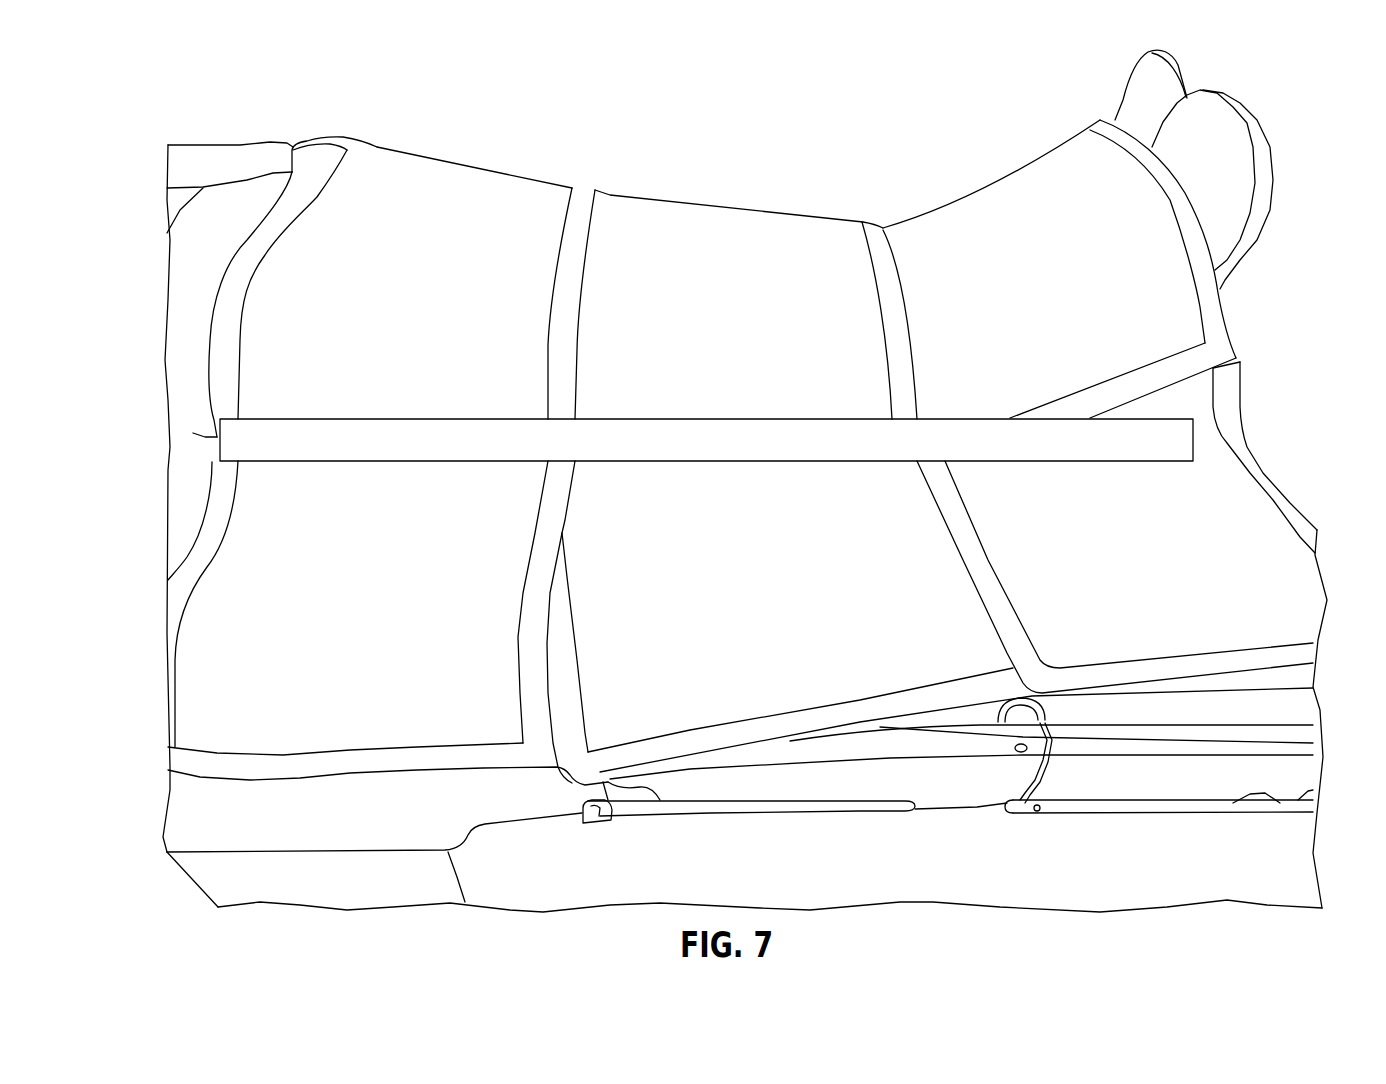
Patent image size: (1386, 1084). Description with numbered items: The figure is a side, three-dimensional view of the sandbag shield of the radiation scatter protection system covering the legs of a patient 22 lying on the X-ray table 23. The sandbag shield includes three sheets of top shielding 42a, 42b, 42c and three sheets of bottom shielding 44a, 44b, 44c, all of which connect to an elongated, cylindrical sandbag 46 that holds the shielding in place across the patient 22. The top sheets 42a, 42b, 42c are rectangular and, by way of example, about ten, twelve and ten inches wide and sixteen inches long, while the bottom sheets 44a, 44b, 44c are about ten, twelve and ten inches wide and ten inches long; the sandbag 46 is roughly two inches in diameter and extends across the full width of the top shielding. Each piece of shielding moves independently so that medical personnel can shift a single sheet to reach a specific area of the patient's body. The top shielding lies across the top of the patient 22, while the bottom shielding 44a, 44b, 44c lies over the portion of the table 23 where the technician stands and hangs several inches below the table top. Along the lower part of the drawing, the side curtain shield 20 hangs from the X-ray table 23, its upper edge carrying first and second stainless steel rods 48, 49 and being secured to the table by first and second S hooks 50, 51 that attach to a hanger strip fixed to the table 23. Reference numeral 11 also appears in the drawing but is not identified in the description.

The garment 11 is at (1050, 193).
The side curtain shield 20 is at (908, 882).
The patient 22 is at (1127, 95).
The X-ray table 23 is at (1295, 763).
The top shielding sheet 42a is at (465, 203).
The top shielding sheet 42b is at (677, 228).
The top shielding sheet 42c is at (928, 238).
The bottom shielding sheet 44a is at (217, 710).
The bottom shielding sheet 44b is at (680, 710).
The bottom shielding sheet 44c is at (1238, 523).
The sandbag 46 is at (1158, 440).
The first stainless steel rod 48 is at (818, 807).
The second stainless steel rod 49 is at (1210, 805).
The first S hook 50 is at (610, 792).
The second S hook 51 is at (1045, 768).